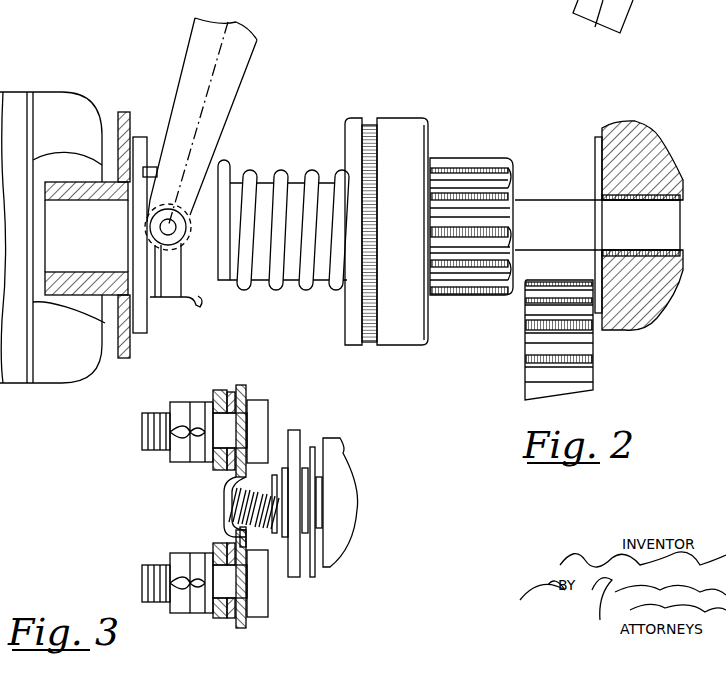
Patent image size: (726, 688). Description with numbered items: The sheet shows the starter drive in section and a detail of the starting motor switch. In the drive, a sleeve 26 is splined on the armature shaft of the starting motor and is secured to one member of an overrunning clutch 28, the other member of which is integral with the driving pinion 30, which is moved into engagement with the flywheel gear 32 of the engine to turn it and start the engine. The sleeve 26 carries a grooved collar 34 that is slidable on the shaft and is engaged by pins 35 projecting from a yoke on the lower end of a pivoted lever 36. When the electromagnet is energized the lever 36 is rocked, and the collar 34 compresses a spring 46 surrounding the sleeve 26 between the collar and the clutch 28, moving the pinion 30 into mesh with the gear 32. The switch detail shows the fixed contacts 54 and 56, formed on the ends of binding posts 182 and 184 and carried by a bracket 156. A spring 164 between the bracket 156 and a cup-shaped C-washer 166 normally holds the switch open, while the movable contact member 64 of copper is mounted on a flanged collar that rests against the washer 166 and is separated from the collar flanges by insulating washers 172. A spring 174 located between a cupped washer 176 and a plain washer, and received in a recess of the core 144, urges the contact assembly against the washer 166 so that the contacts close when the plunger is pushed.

In FIG. 2, the sleeve 26 is at (259, 282).
In FIG. 2, the overrunning clutch 28 is at (402, 334).
In FIG. 2, the driving pinion 30 is at (486, 300).
In FIG. 2, the flywheel gear 32 is at (527, 368).
In FIG. 2, the grooved collar 34 is at (197, 306).
In FIG. 2, the pins 35 is at (160, 226).
In FIG. 2, the lever 36 is at (227, 95).
In FIG. 2, the spring 46 is at (282, 178).
In FIG. 3, the fixed contact 54 is at (266, 408).
In FIG. 3, the fixed contact 56 is at (265, 604).
In FIG. 3, the movable contact member 64 is at (295, 437).
In FIG. 3, the core 144 is at (338, 468).
In FIG. 3, the bracket 156 is at (222, 486).
In FIG. 3, the spring 164 is at (217, 510).
In FIG. 3, the cup-shaped C-washer 166 is at (287, 576).
In FIG. 3, the insulating washers 172 is at (312, 542).
In FIG. 3, the spring 174 is at (317, 500).
In FIG. 3, the cupped washer 176 is at (312, 447).
In FIG. 3, the binding post 182 is at (141, 431).
In FIG. 3, the binding post 184 is at (143, 573).